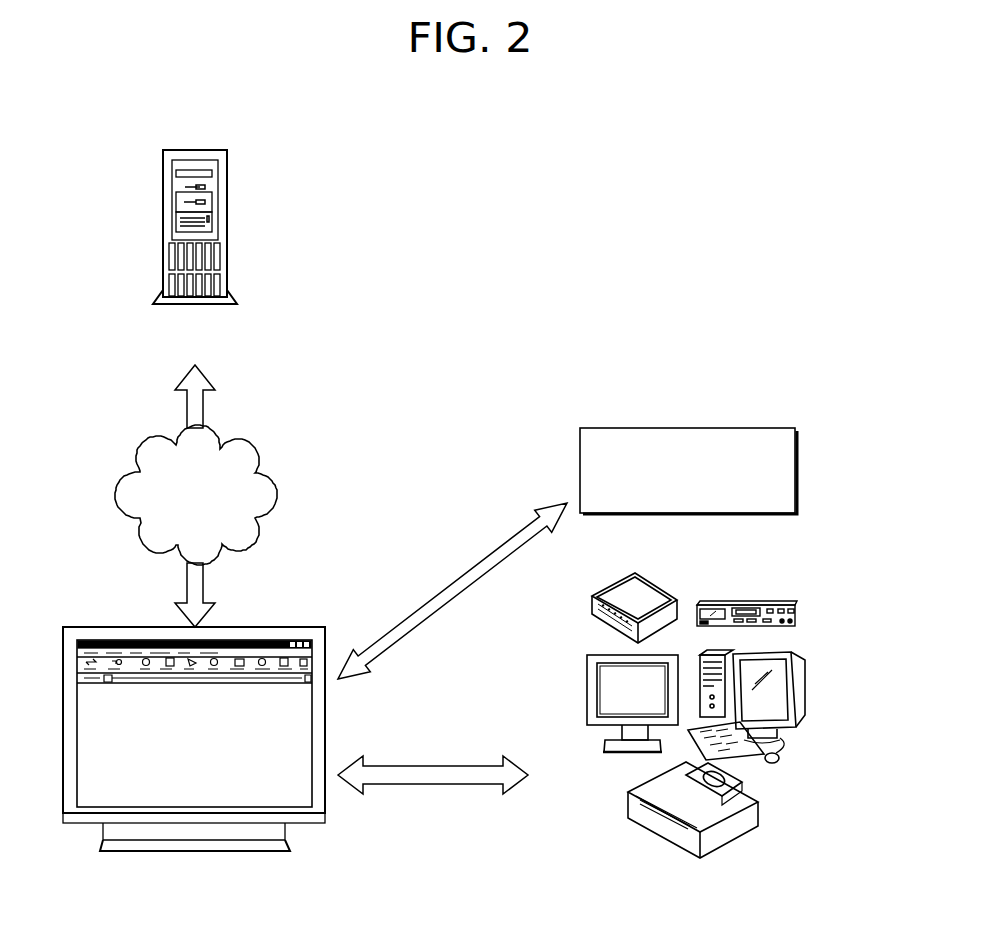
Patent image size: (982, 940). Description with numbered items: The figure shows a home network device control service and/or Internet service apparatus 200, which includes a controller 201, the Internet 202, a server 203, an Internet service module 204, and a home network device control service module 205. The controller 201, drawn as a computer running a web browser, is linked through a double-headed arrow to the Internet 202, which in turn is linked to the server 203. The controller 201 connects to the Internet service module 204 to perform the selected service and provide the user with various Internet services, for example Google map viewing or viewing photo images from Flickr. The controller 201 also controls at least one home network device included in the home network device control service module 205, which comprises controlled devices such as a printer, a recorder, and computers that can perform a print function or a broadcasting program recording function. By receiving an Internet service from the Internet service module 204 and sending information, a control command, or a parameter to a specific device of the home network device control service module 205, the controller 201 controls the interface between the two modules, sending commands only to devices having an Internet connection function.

The home network device control service and/or Internet service apparatus 200 is at (424, 383).
The controller 201 is at (194, 761).
The Internet 202 is at (115, 497).
The server 203 is at (189, 247).
The Internet service module 204 is at (731, 428).
The home network device control service module 205 is at (709, 748).